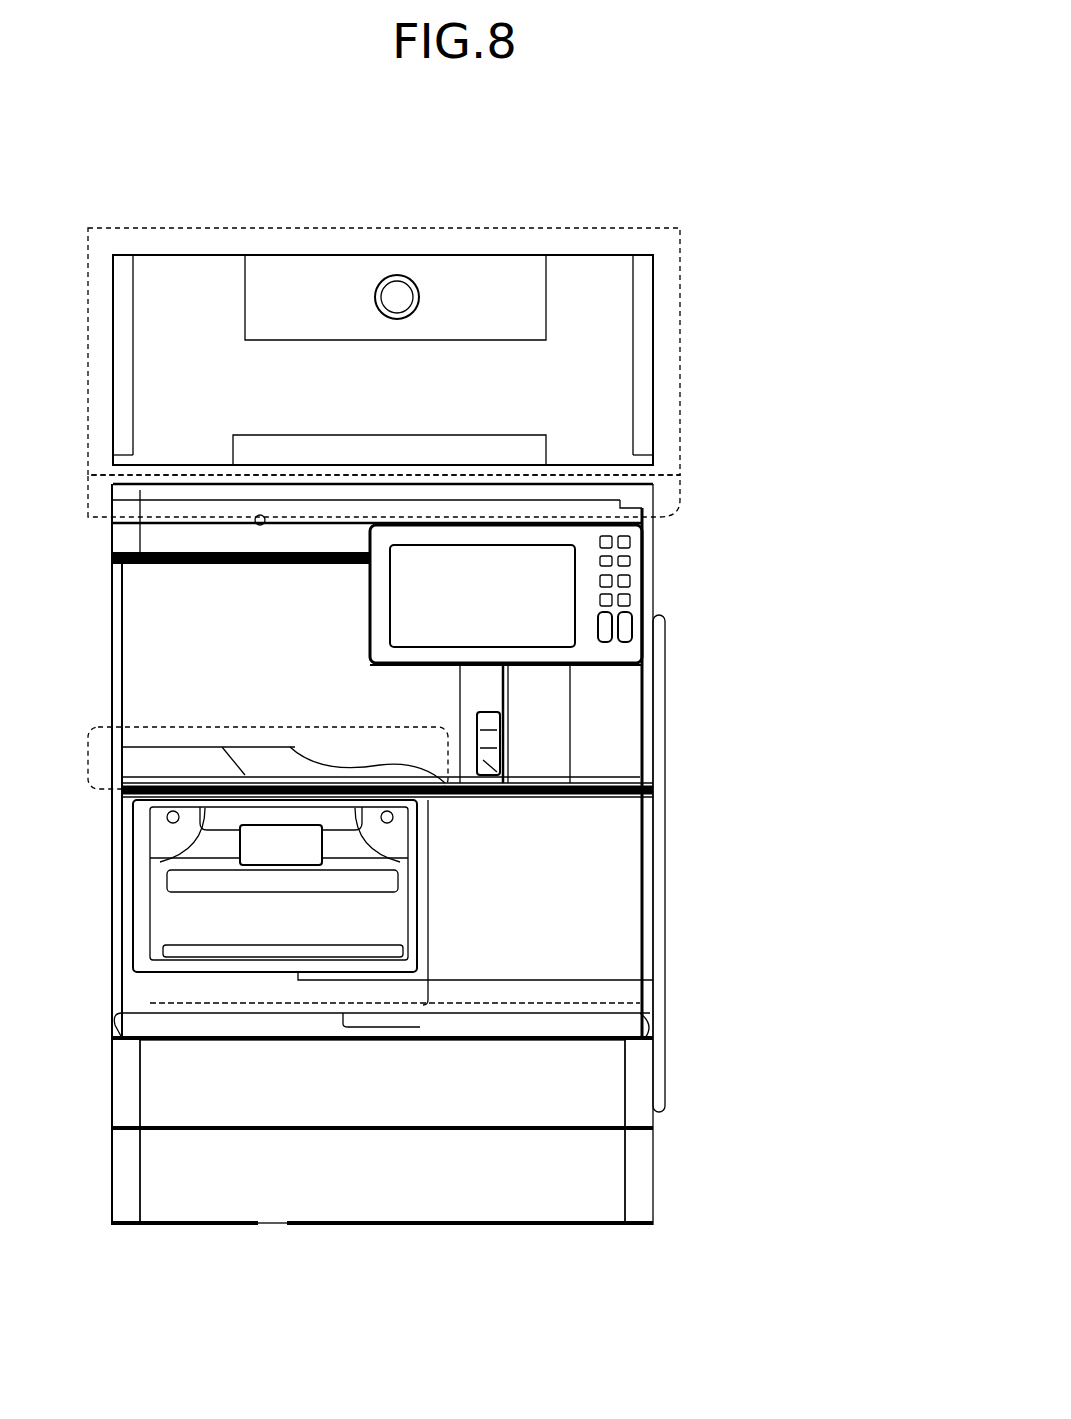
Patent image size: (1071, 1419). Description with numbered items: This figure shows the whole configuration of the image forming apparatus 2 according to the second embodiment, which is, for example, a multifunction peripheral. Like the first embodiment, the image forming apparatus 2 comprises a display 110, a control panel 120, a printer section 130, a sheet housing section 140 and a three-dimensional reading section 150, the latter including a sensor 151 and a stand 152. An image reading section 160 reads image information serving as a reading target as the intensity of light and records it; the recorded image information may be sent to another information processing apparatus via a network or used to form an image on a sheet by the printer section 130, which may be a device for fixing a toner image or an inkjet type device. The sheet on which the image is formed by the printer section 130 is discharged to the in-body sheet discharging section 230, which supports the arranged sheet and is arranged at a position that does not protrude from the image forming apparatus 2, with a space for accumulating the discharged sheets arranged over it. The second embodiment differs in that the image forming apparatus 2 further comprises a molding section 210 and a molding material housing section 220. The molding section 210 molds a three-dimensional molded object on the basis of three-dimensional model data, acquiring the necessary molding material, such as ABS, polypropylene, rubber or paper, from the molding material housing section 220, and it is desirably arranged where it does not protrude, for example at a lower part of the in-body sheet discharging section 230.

The image forming apparatus 2 is at (717, 224).
The three-dimensional reading section 150 is at (590, 226).
The sensor 151 is at (412, 298).
The stand 152 is at (510, 432).
The image reading section 160 is at (686, 496).
The display 110 is at (520, 580).
The control panel 120 is at (640, 652).
The printer section 130 is at (690, 783).
The sheet housing section 140 is at (690, 1130).
The molding section 210 is at (430, 856).
The molding material housing section 220 is at (690, 1030).
The in-body sheet discharging section 230 is at (470, 703).